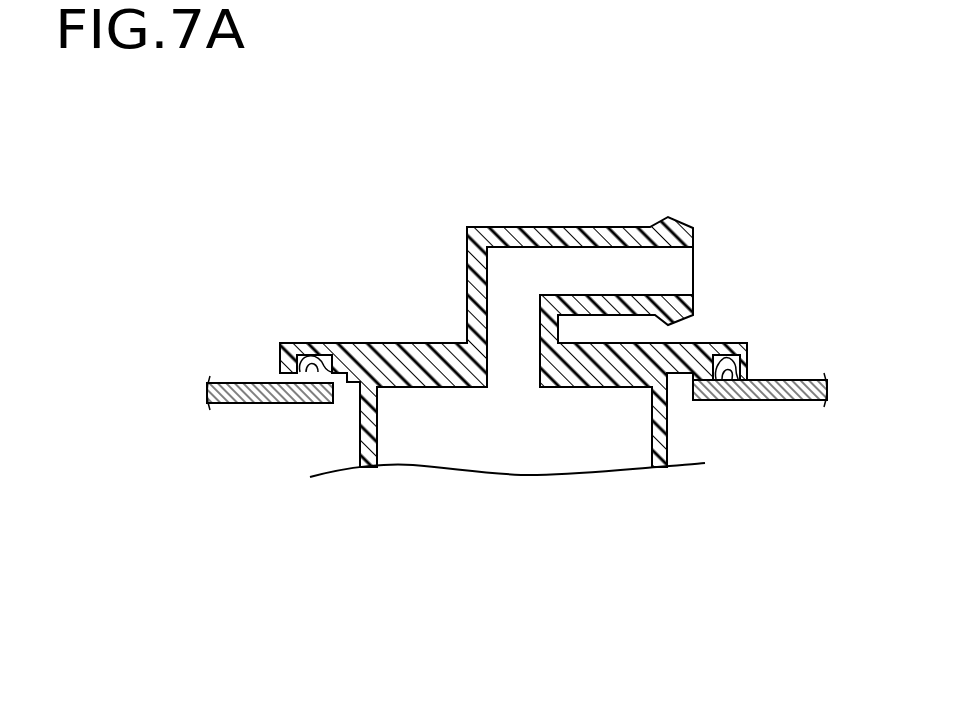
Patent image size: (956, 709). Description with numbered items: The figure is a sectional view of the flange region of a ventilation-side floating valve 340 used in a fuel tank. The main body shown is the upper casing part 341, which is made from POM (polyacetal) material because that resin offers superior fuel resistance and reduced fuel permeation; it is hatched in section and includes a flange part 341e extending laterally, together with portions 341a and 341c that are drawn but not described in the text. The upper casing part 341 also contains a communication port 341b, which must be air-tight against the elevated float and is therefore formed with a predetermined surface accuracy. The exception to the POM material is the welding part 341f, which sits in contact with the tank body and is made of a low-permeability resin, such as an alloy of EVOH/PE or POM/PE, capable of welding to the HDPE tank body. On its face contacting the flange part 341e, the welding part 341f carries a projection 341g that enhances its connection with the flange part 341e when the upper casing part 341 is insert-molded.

The ventilation-side floating valve 340 is at (198, 438).
The upper casing part 341 is at (486, 315).
The wall portion 341a is at (667, 430).
The communication port 341b is at (510, 387).
The engaging portion 341c is at (693, 268).
The flange part 341e is at (338, 345).
The welding part 341f is at (283, 372).
The projection 341g is at (357, 378).